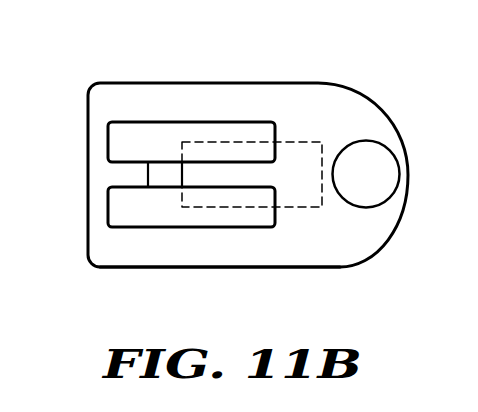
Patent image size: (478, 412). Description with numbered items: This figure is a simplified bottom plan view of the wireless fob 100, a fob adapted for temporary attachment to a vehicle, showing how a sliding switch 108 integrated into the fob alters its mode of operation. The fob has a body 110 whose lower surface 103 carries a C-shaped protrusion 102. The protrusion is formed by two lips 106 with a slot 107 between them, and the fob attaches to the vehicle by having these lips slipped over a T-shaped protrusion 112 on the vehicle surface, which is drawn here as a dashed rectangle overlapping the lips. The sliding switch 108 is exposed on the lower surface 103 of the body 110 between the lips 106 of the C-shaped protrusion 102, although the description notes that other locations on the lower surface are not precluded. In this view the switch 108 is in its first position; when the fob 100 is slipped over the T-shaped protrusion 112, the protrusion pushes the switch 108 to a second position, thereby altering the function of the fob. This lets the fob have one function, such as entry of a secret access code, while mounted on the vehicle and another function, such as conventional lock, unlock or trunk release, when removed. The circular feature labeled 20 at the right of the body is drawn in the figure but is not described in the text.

The wireless fob 100 is at (241, 193).
The C-shaped protrusion 102 is at (274, 106).
The lower surface 103 is at (350, 103).
The lips 106 is at (118, 141).
The slot 107 is at (218, 172).
The sliding switch 108 is at (158, 173).
The body 110 is at (218, 267).
The T-shaped protrusion 112 is at (302, 208).
The opening 20 is at (377, 160).